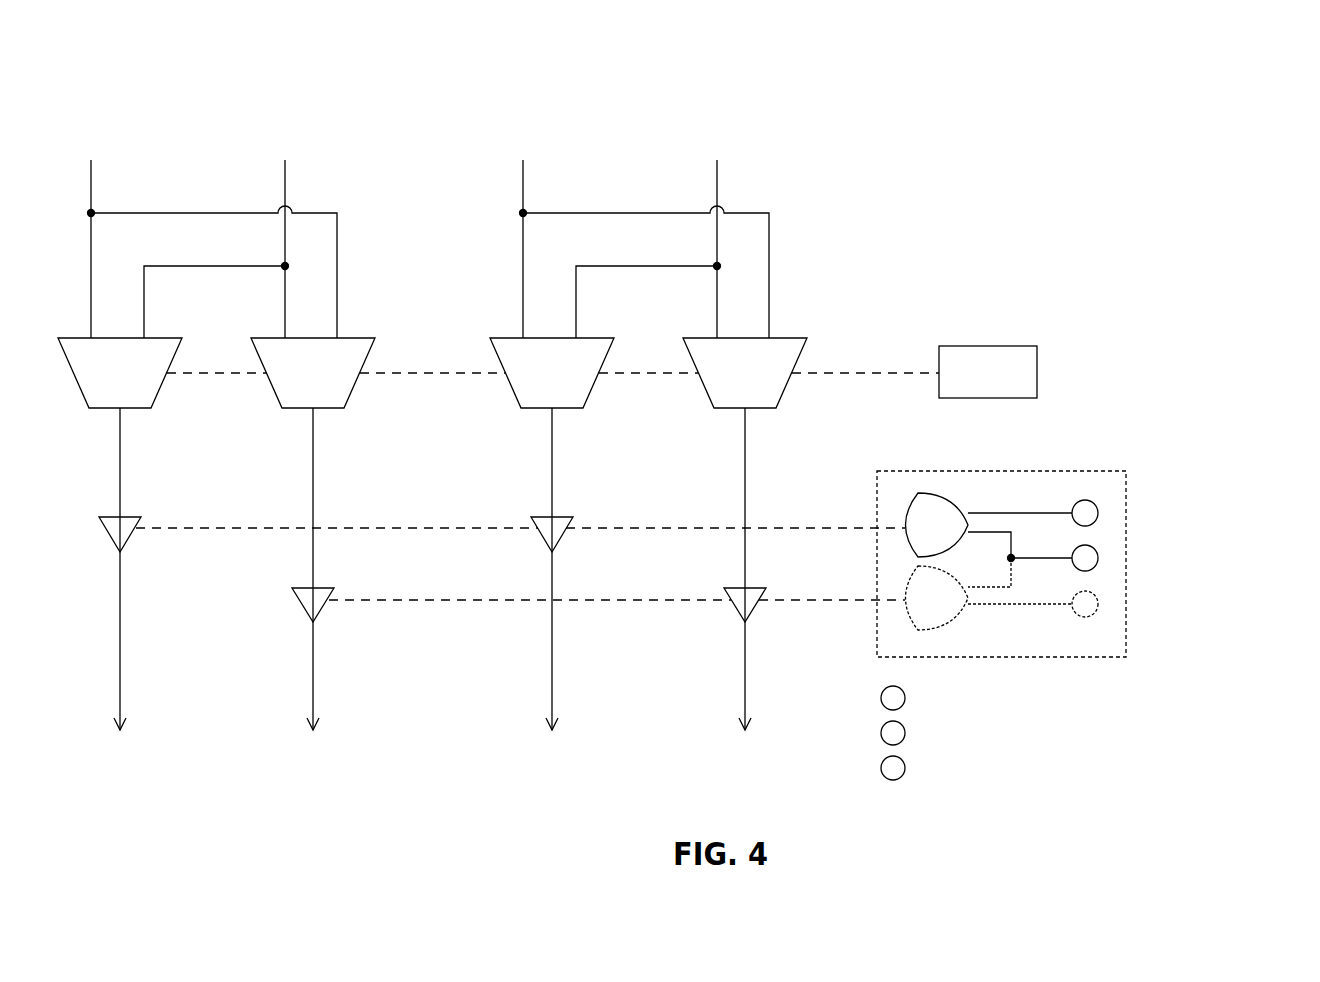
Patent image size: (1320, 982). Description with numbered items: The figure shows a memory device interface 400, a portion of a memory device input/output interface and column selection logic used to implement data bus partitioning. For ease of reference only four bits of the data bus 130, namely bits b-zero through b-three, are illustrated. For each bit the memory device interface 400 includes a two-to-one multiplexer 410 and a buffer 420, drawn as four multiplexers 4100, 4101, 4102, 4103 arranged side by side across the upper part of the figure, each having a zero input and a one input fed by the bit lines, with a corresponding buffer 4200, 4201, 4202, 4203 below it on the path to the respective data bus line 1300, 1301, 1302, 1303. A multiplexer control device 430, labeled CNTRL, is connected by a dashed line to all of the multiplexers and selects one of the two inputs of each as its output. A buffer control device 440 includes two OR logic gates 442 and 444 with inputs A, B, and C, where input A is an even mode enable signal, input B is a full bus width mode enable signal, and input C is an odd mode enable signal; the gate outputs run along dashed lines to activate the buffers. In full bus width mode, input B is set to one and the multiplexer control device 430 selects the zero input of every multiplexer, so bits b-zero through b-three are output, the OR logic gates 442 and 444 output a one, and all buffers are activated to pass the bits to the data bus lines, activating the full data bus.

The memory device interface 400 is at (1269, 68).
The 2:1 multiplexer 410 is at (450, 347).
The multiplexer 4100 is at (158, 338).
The multiplexer 4101 is at (351, 338).
The multiplexer 4102 is at (590, 338).
The multiplexer 4103 is at (783, 338).
The buffer 420 is at (455, 545).
The buffer 4200 is at (133, 517).
The buffer 4201 is at (325, 588).
The buffer 4202 is at (565, 517).
The buffer 4203 is at (757, 588).
The data bus 130 is at (469, 569).
The data bus line 1300 is at (120, 637).
The data bus line 1301 is at (313, 678).
The data bus line 1302 is at (552, 637).
The data bus line 1303 is at (745, 678).
The multiplexer control device 430 is at (1007, 346).
The buffer control device 440 is at (1080, 471).
The OR logic gate 442 is at (1002, 532).
The OR logic gate 444 is at (1002, 594).